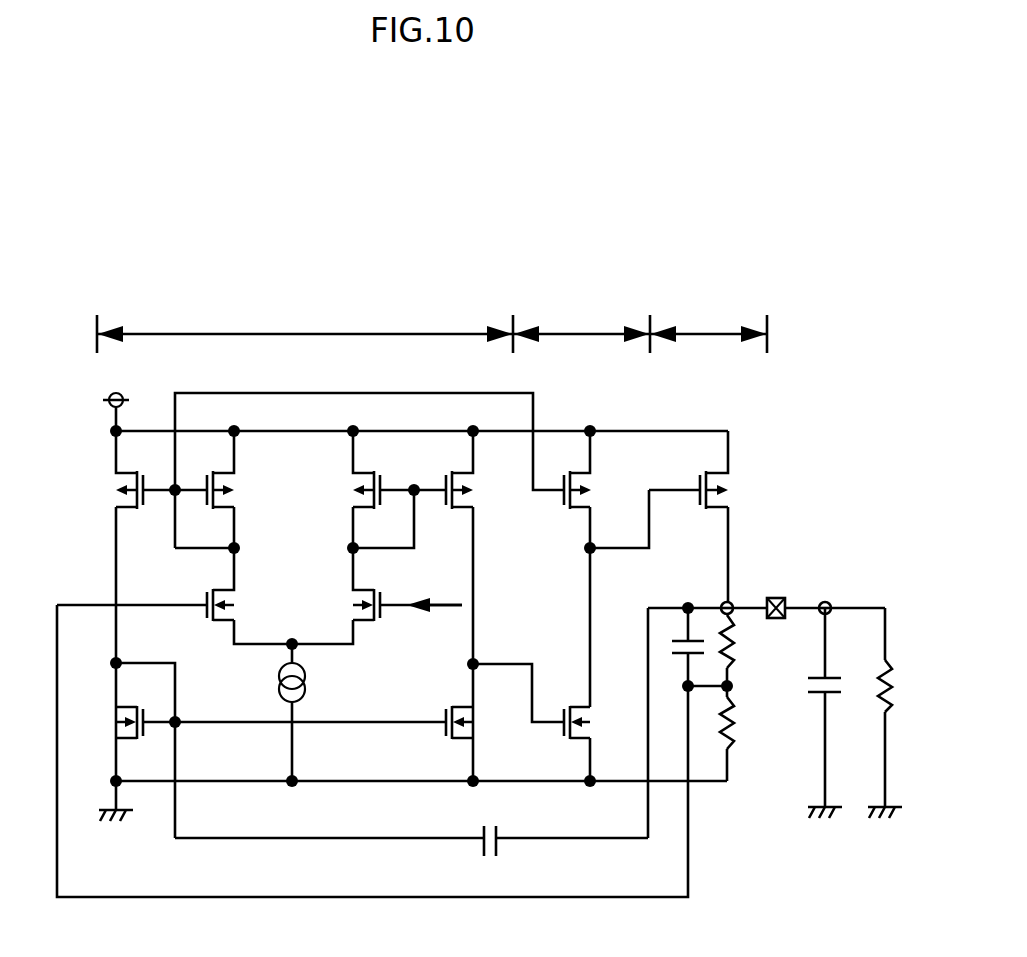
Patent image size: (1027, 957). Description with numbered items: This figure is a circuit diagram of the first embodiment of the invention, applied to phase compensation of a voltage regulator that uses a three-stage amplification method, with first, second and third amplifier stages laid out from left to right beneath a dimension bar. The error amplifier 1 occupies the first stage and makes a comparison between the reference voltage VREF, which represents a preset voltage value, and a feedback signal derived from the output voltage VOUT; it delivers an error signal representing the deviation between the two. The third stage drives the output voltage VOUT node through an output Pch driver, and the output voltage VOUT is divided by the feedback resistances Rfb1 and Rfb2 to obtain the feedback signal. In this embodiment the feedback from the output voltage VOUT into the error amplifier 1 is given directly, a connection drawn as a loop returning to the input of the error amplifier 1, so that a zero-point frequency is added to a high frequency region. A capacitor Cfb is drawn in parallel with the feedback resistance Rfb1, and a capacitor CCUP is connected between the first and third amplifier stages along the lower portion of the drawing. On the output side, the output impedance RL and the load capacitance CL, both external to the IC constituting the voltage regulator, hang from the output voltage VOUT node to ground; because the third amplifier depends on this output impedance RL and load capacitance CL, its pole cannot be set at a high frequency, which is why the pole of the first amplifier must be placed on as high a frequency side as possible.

The error amplifier 1 is at (310, 418).
The reference voltage VREF is at (434, 590).
The output voltage VOUT is at (776, 594).
The feedback capacitor Cfb is at (678, 663).
The feedback resistance Rfb1 is at (747, 641).
The feedback resistance Rfb2 is at (747, 723).
The compensation capacitor CCUP is at (411, 851).
The load capacitance CL is at (836, 713).
The output impedance RL is at (895, 713).